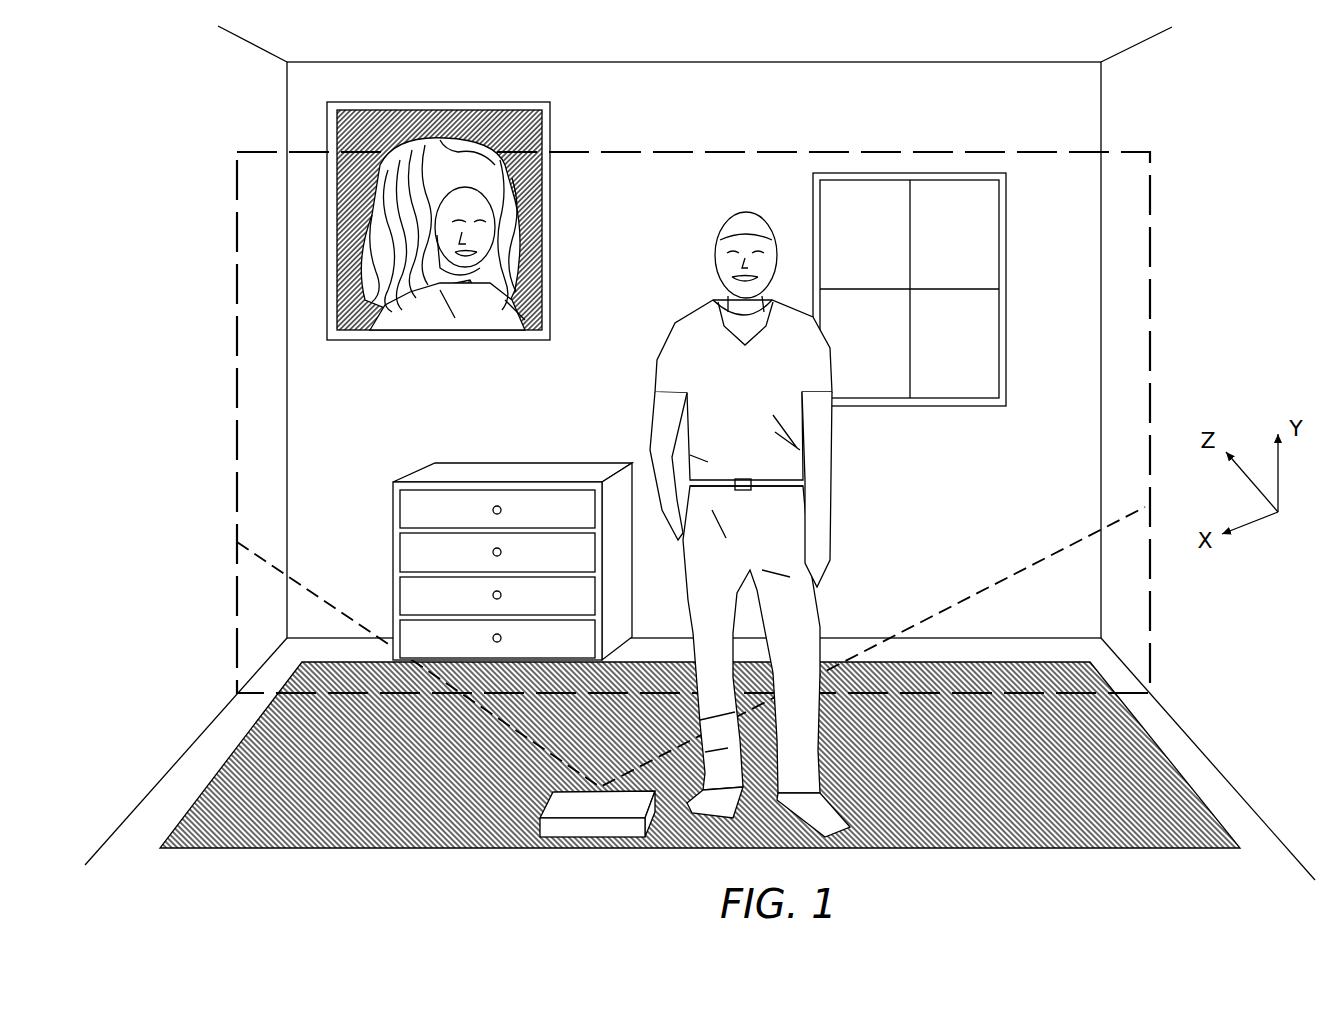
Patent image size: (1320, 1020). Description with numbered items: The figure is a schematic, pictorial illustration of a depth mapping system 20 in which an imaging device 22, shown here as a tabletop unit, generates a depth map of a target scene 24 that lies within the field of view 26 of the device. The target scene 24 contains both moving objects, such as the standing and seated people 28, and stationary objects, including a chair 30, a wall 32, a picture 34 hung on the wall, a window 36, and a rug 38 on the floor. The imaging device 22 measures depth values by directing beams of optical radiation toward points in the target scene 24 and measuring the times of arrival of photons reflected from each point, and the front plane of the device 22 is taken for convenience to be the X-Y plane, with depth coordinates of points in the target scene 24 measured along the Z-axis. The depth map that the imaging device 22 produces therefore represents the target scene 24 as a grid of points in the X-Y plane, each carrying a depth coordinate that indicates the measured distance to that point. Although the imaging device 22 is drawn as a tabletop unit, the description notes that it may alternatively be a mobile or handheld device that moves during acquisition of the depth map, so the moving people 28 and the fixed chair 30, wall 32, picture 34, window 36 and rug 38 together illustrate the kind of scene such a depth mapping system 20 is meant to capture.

The depth mapping system 20 is at (177, 227).
The imaging device 22 is at (580, 832).
The target scene 24 is at (1150, 227).
The field of view 26 is at (313, 597).
The human figures 28 is at (678, 325).
The chair 30 is at (600, 463).
The wall 32 is at (595, 205).
The picture 34 is at (552, 110).
The window 36 is at (1006, 200).
The rug 38 is at (228, 756).